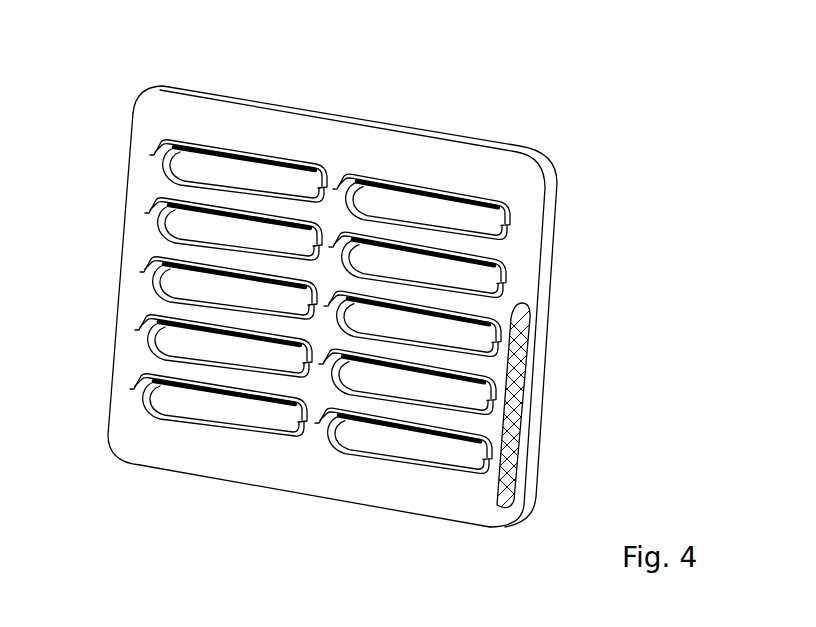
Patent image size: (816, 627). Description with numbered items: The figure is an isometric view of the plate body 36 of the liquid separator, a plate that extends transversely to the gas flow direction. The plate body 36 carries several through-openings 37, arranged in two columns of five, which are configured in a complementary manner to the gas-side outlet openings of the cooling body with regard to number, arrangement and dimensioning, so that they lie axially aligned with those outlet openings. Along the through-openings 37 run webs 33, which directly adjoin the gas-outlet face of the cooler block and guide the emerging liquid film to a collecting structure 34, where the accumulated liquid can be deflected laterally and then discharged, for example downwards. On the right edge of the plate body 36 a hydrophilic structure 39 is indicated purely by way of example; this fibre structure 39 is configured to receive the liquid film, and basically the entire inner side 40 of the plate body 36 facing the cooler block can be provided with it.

The webs 33 is at (160, 160).
The collecting structure 34 is at (140, 353).
The plate body 36 is at (603, 157).
The through-openings 37 is at (267, 300).
The hydrophilic structure 39 is at (513, 410).
The inner side 40 is at (297, 465).